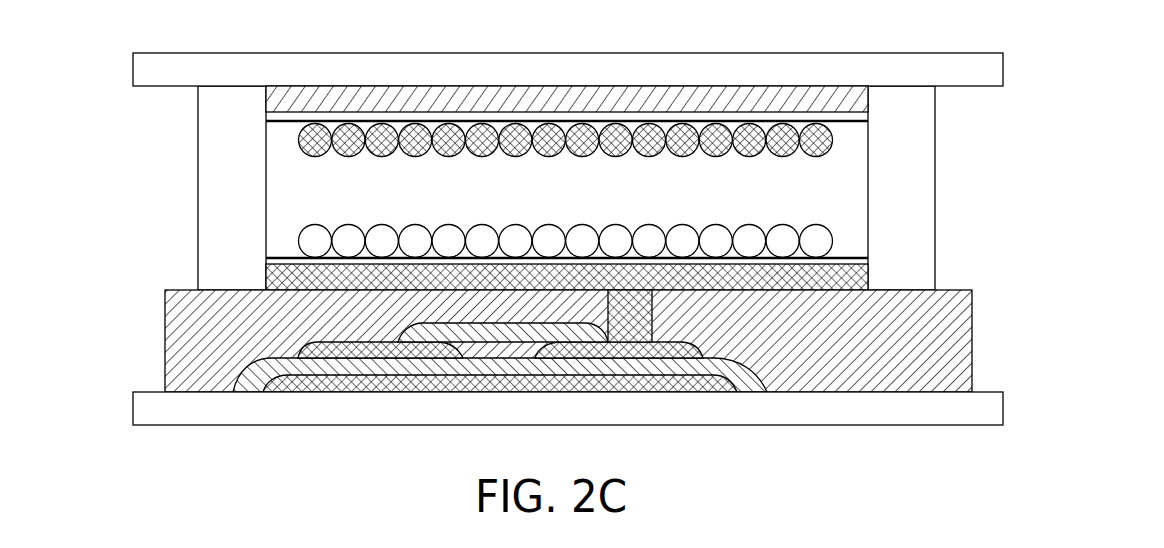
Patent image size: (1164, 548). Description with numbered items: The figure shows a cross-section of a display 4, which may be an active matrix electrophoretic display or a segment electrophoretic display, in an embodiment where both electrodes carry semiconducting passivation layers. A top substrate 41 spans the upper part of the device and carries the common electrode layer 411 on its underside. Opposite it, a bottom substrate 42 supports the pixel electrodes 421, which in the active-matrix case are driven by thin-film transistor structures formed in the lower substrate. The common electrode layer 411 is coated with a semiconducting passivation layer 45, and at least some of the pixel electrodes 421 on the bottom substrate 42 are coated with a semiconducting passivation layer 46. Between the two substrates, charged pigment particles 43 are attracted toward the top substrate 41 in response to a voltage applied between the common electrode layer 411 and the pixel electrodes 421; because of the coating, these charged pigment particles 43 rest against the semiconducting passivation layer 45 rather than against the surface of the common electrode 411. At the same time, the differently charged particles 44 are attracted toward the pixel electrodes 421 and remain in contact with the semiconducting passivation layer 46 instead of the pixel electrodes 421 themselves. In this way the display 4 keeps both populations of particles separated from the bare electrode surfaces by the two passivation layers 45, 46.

The display 4 is at (621, 239).
The top substrate 41 is at (997, 74).
The common electrode layer 411 is at (848, 102).
The bottom substrate 42 is at (990, 410).
The pixel electrodes 421 is at (870, 277).
The charged pigment particles 43 is at (305, 140).
The differently charged particles 44 is at (305, 242).
The semiconducting passivation layer 45 is at (848, 122).
The semiconducting passivation layer 46 is at (858, 262).